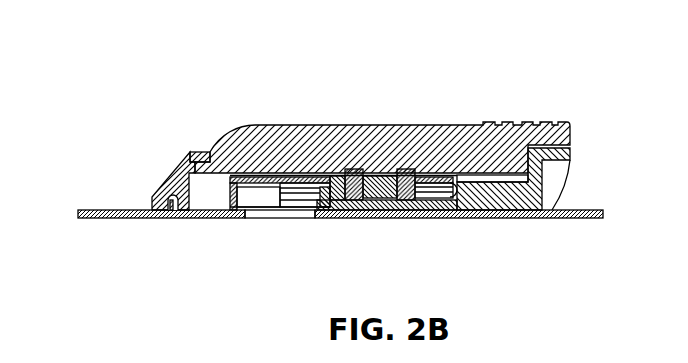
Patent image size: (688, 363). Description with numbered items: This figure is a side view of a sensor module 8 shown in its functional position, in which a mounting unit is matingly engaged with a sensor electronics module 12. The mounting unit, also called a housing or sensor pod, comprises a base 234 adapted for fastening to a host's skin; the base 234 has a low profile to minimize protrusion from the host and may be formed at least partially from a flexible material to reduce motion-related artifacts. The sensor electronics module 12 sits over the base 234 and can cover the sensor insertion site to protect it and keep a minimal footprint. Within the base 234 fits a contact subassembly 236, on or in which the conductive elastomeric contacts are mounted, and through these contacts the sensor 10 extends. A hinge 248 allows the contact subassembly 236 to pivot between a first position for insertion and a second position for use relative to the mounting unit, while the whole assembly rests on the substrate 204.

The sensor module 8 is at (321, 152).
The sensor electronics module 12 is at (452, 130).
The substrate 204 is at (92, 210).
The base 234 is at (170, 173).
The contact subassembly 236 is at (377, 212).
The hinge 248 is at (290, 207).
The sensor 10 is at (302, 237).